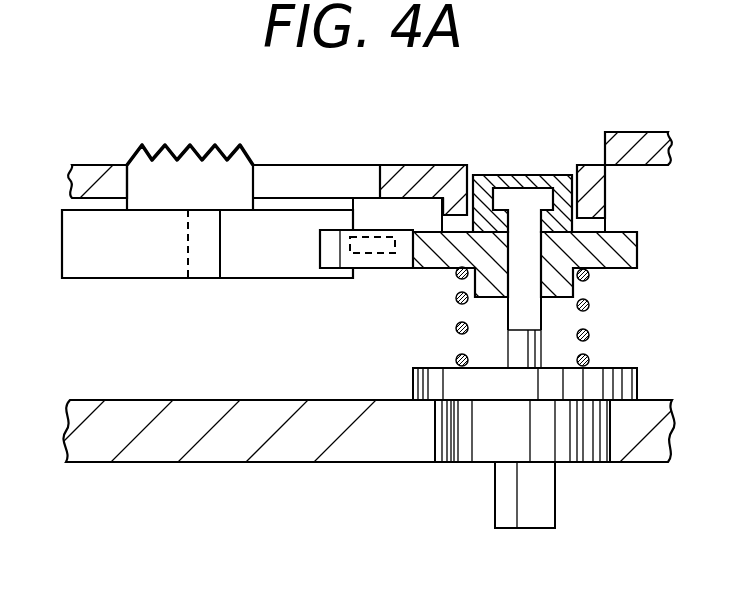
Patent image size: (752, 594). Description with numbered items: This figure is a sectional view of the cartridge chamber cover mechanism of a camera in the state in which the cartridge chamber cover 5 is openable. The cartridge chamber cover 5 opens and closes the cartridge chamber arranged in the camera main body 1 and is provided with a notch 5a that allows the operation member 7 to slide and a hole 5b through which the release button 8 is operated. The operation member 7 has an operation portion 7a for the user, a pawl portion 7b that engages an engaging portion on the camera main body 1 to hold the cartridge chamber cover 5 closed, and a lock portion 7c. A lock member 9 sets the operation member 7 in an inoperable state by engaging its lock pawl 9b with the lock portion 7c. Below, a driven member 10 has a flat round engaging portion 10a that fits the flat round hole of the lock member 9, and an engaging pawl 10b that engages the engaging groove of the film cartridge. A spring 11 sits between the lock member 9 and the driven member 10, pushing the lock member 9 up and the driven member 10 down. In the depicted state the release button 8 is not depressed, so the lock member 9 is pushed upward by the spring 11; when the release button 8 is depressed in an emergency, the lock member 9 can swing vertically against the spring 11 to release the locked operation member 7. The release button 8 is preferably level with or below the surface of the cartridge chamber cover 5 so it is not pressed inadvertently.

The camera main body 1 is at (160, 445).
The cartridge chamber cover 5 is at (334, 165).
The notch 5a is at (370, 182).
The hole 5b is at (483, 172).
The operation member 7 is at (80, 247).
The operation portion 7a is at (140, 165).
The pawl portion 7b is at (377, 253).
The lock portion 7c is at (187, 240).
The release button 8 is at (518, 172).
The lock member 9 is at (637, 250).
The lock pawl 9b is at (347, 252).
The driven member 10 is at (487, 445).
The flat round engaging portion 10a is at (519, 243).
The engaging pawl 10b is at (500, 503).
The spring 11 is at (590, 336).